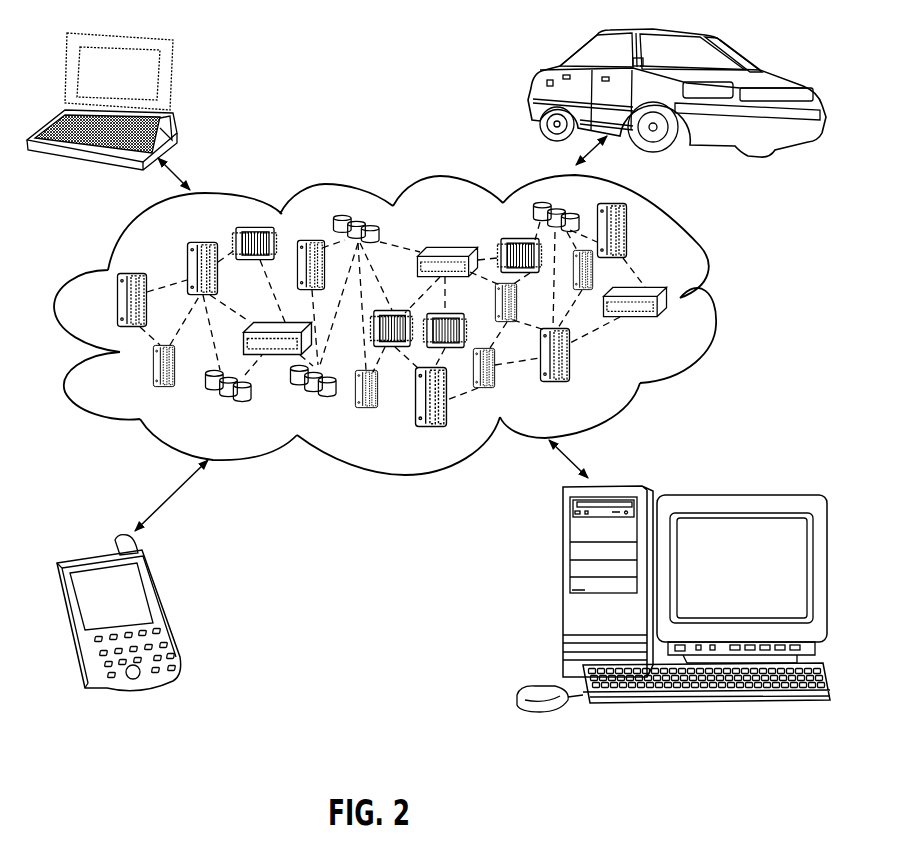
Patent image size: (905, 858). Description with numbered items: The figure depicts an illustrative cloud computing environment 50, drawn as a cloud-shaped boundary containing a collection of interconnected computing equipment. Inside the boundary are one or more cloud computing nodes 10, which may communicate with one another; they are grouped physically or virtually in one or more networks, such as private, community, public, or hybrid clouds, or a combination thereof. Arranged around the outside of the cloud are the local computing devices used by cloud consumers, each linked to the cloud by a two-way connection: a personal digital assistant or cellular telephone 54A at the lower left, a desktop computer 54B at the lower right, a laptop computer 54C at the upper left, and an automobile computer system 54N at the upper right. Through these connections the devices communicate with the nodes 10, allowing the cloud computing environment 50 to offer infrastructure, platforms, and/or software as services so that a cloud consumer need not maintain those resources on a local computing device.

The cloud computing nodes 10 is at (702, 325).
The cloud computing environment 50 is at (710, 263).
The personal digital assistant or cellular telephone 54A is at (163, 607).
The desktop computer 54B is at (563, 588).
The laptop computer 54C is at (173, 78).
The automobile computer system 54N is at (537, 82).